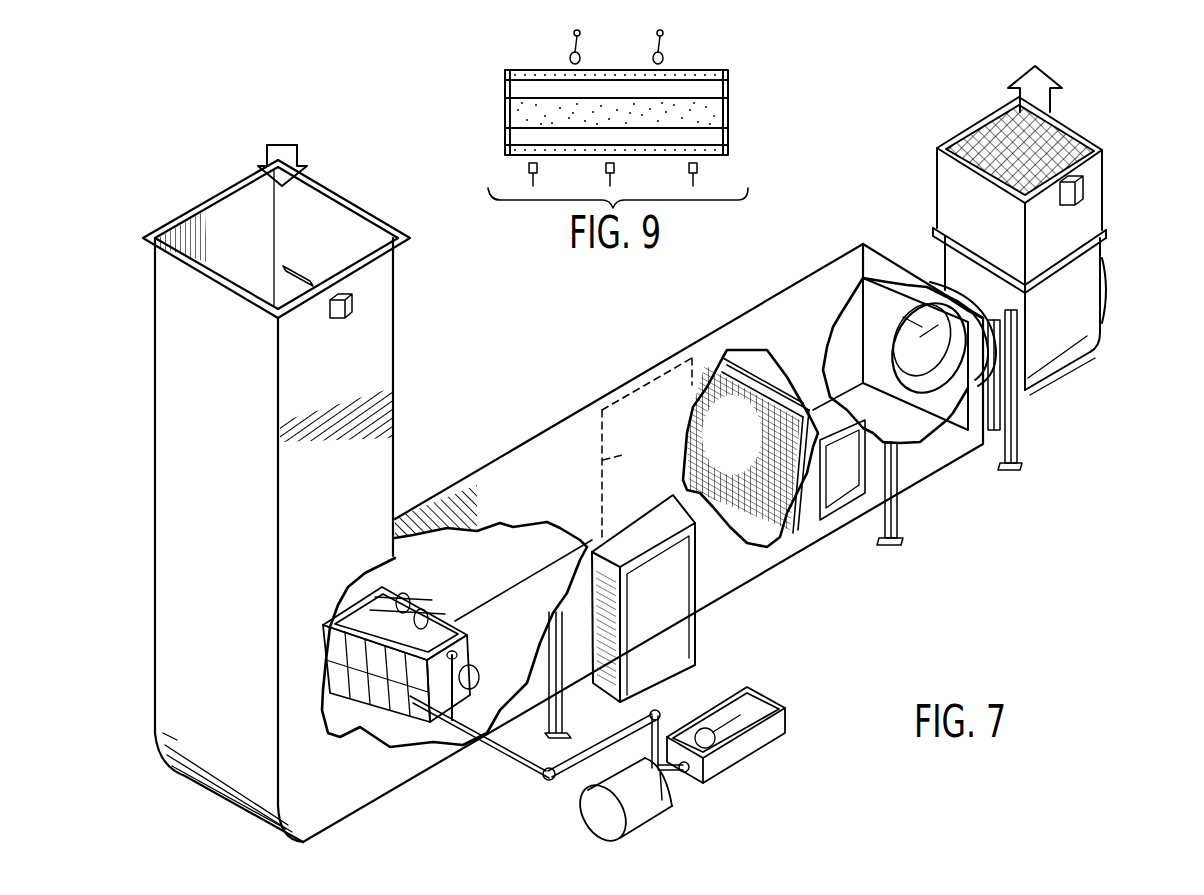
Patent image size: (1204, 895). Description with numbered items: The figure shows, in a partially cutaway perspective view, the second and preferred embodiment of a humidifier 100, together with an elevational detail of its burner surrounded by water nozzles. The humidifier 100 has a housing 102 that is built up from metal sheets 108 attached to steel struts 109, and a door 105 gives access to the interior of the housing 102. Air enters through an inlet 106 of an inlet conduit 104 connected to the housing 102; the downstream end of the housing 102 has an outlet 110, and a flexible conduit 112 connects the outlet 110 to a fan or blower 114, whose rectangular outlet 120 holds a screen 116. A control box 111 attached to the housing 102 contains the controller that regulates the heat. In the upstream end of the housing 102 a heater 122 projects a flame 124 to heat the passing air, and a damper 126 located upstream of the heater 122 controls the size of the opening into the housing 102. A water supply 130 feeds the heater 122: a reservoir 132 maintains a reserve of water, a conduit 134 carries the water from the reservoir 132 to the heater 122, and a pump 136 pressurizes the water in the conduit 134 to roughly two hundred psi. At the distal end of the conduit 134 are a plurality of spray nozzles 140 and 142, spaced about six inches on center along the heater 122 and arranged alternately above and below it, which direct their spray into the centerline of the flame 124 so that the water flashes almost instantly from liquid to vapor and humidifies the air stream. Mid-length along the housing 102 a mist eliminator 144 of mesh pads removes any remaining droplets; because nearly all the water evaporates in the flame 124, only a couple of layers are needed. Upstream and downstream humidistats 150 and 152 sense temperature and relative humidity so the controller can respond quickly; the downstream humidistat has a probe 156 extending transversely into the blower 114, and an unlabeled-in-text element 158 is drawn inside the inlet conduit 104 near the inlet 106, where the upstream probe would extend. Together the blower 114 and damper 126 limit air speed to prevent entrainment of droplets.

In FIG. 7, the humidifier 100 is at (825, 570).
In FIG. 7, the housing 102 is at (563, 438).
In FIG. 7, the inlet conduit 104 is at (183, 415).
In FIG. 7, the door 105 is at (627, 452).
In FIG. 7, the inlet 106 is at (230, 205).
In FIG. 7, the metal sheets 108 is at (977, 440).
In FIG. 7, the steel struts 109 is at (878, 507).
In FIG. 7, the outlet 110 is at (899, 318).
In FIG. 7, the control box 111 is at (683, 641).
In FIG. 7, the flexible conduit 112 is at (951, 418).
In FIG. 7, the blower 114 is at (1077, 328).
In FIG. 7, the screen 116 is at (992, 135).
In FIG. 7, the rectangular outlet 120 is at (1057, 125).
In FIG. 7, the heater 122 is at (438, 688).
In FIG. 9, the heater 122 is at (728, 112).
In FIG. 7, the flame 124 is at (452, 577).
In FIG. 7, the damper 126 is at (325, 690).
In FIG. 7, the water supply 130 is at (722, 695).
In FIG. 7, the reservoir 132 is at (747, 747).
In FIG. 7, the conduit 134 is at (656, 716).
In FIG. 7, the pump 136 is at (653, 822).
In FIG. 7, the spray nozzles 140 is at (408, 600).
In FIG. 9, the spray nozzles 140 is at (653, 56).
In FIG. 7, the spray nozzles 142 is at (478, 684).
In FIG. 9, the spray nozzles 142 is at (607, 177).
In FIG. 7, the mist eliminator 144 is at (710, 375).
In FIG. 7, the upstream humidistat 150 is at (352, 298).
In FIG. 7, the downstream humidistat 152 is at (1078, 190).
In FIG. 7, the probe 156 is at (1087, 122).
In FIG. 7, the deflector 158 is at (318, 270).